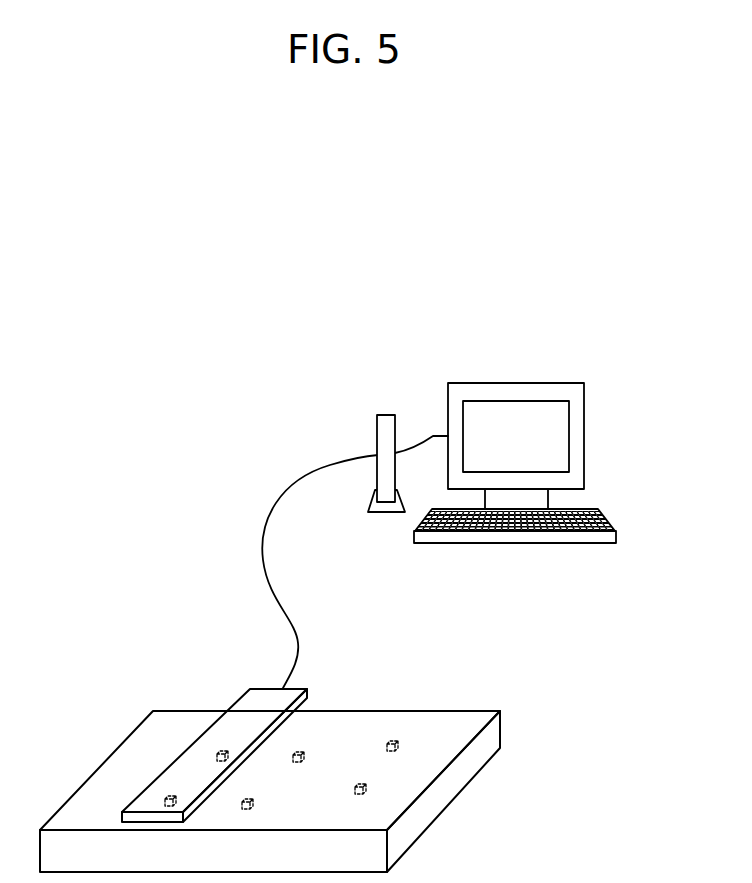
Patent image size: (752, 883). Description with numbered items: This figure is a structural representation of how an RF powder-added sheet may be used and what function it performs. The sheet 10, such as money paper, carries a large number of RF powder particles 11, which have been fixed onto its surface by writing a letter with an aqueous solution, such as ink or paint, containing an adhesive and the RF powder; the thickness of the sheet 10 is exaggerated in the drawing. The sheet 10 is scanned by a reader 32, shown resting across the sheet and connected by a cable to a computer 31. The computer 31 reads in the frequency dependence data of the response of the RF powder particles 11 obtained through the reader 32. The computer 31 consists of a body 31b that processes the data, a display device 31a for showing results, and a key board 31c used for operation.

The sheet 10 is at (435, 818).
The RF powder particles 11 is at (300, 748).
The computer 31 is at (508, 419).
The display device 31a is at (584, 436).
The body 31b is at (377, 432).
The key board 31c is at (600, 514).
The reader 32 is at (247, 691).